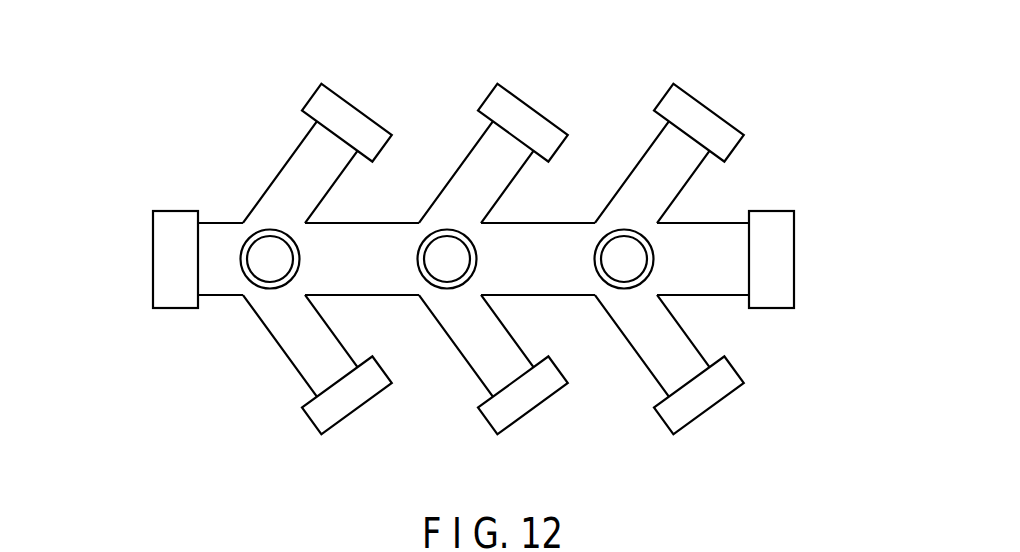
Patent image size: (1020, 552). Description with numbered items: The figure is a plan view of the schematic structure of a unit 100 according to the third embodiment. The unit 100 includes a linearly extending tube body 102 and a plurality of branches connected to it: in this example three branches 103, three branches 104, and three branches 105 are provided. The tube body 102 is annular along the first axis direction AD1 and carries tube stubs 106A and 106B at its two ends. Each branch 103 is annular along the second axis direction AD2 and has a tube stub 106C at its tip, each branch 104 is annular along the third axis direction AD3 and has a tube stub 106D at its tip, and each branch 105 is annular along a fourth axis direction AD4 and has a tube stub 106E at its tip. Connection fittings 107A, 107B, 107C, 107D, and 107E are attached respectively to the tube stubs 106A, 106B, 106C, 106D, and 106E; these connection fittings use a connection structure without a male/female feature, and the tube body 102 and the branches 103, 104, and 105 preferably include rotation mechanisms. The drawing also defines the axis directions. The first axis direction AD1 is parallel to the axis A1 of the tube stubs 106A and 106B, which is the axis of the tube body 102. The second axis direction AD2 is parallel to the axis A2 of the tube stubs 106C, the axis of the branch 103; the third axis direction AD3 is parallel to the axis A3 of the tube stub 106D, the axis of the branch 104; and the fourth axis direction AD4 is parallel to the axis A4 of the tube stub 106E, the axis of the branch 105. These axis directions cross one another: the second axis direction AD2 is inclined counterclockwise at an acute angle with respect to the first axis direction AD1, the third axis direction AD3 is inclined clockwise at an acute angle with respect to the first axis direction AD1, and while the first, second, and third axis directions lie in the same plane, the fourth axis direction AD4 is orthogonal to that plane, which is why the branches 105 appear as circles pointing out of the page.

The unit 100 is at (202, 124).
The tube body 102 is at (553, 223).
The branch 103 is at (484, 145).
The branch 104 is at (486, 369).
The branch 105 is at (464, 261).
The tube stub 106A is at (128, 249).
The tube stub 106B is at (818, 238).
The tube stub 106C is at (310, 147).
The tube stub 106D is at (352, 369).
The tube stub 106E is at (313, 259).
The connection fitting 107A is at (170, 287).
The connection fitting 107B is at (770, 222).
The connection fitting 107C is at (355, 58).
The connection fitting 107D is at (323, 417).
The connection fitting 107E is at (297, 270).
The axis A1 is at (227, 258).
The axis A2 is at (310, 173).
The axis A3 is at (304, 337).
The axis A4 is at (270, 259).
The first axis direction AD1 is at (129, 424).
The second axis direction AD2 is at (127, 418).
The third axis direction AD3 is at (127, 430).
The fourth axis direction AD4 is at (92, 424).